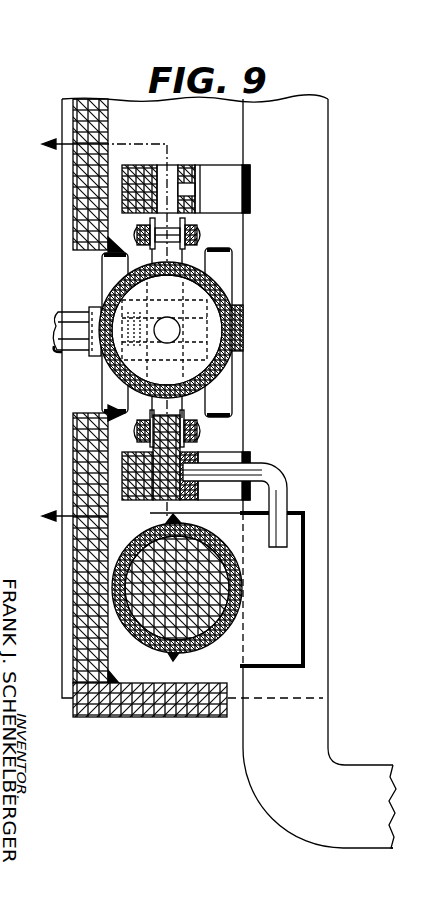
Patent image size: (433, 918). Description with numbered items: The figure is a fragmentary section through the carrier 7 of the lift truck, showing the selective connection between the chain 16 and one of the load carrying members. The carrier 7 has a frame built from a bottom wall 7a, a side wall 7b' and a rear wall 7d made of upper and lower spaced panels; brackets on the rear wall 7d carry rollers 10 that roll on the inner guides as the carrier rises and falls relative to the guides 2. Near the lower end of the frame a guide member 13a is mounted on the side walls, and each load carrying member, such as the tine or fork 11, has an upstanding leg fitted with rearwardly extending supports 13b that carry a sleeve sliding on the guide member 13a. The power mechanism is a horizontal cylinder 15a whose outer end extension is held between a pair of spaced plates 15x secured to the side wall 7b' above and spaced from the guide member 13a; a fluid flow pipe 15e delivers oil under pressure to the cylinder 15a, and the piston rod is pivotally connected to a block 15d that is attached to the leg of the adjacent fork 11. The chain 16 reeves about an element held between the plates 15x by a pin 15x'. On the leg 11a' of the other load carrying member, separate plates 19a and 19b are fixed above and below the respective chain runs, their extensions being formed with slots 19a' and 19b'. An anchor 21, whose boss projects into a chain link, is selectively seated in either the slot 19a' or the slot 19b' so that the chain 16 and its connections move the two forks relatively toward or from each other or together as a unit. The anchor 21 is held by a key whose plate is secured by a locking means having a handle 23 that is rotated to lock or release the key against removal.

The guides 2 is at (426, 750).
The carrier 7 is at (353, 414).
The bottom wall 7a is at (159, 712).
The side wall 7b' is at (195, 125).
The rear wall 7d is at (82, 192).
The rollers 10 is at (93, 330).
The tine or fork 11 is at (363, 783).
The upstanding leg 11a' is at (344, 423).
The guide member 13a is at (217, 589).
The supports 13b is at (278, 623).
The cylinder 15a is at (218, 366).
The block 15d is at (108, 372).
The fluid flow pipe 15e is at (72, 322).
The spaced plates 15x is at (177, 332).
The pin 15x' is at (263, 316).
The chain 16 is at (198, 234).
The plate 19a is at (247, 189).
The slot 19a' is at (170, 172).
The plate 19b is at (244, 462).
The slot 19b' is at (155, 497).
The anchor 21 is at (176, 500).
The handle 23 is at (283, 495).